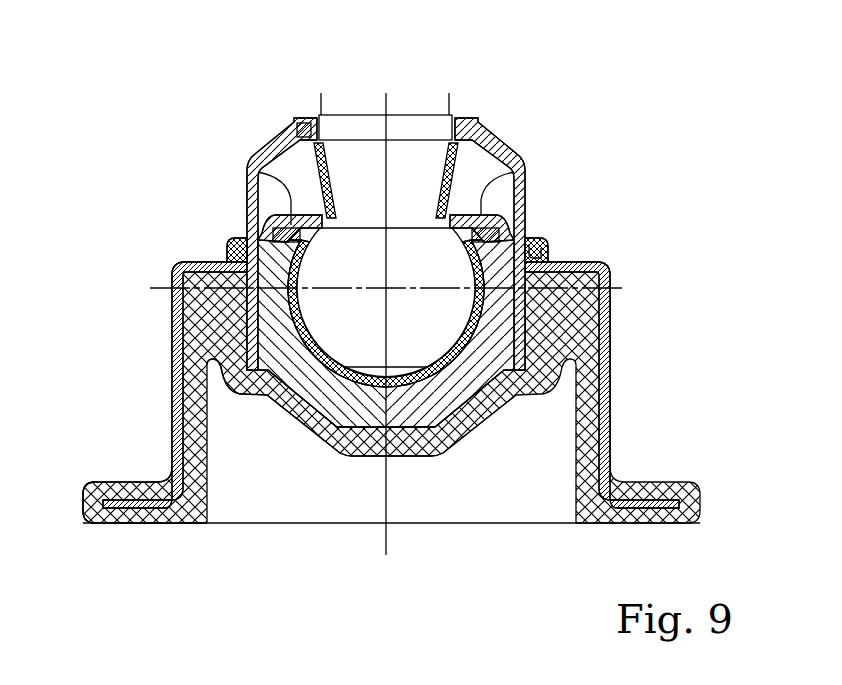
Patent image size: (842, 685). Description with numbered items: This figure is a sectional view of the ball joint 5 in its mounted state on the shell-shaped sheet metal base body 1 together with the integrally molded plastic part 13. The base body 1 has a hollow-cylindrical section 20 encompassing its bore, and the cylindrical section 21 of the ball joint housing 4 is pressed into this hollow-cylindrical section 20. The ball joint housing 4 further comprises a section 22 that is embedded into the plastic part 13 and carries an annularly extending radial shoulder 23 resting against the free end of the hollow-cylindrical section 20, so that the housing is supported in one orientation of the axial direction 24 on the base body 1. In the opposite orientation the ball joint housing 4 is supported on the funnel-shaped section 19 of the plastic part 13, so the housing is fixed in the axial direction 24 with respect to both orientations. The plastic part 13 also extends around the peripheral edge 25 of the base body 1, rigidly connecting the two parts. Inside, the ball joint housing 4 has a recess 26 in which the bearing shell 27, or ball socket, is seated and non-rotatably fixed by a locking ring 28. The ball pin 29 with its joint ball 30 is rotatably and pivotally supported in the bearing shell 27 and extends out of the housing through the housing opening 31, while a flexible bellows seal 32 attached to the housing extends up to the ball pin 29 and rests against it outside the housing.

The base body 1 is at (612, 398).
The ball joint housing 4 is at (243, 233).
The ball joint 5 is at (582, 161).
The plastic part 13 is at (203, 527).
The funnel-shaped section 19 is at (318, 420).
The hollow-cylindrical section 20 is at (530, 317).
The cylindrical section 21 is at (550, 238).
The section 22 is at (497, 420).
The radial shoulder 23 is at (170, 357).
The axial direction 24 is at (388, 548).
The peripheral edge 25 is at (130, 527).
The recess 26 is at (402, 398).
The bearing shell 27 is at (285, 300).
The locking ring 28 is at (287, 223).
The ball pin 29 is at (417, 117).
The joint ball 30 is at (355, 265).
The housing opening 31 is at (466, 207).
The bellows seal 32 is at (267, 167).